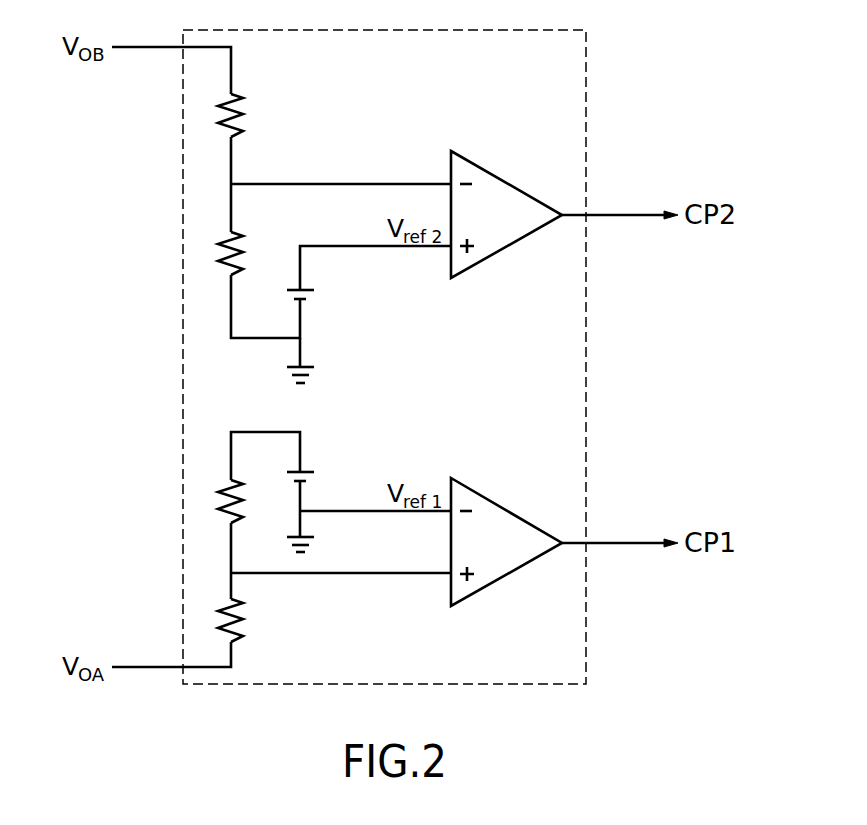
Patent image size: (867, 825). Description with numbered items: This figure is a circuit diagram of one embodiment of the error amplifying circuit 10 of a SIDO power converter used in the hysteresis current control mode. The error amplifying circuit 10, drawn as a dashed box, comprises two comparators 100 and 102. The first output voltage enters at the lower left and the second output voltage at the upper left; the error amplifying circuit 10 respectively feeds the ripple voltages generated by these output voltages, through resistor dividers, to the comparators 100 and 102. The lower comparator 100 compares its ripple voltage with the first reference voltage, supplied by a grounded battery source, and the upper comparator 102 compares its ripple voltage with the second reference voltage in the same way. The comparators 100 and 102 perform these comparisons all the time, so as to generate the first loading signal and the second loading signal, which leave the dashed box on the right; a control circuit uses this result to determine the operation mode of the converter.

The error amplifying circuit 10 is at (586, 89).
The comparator 100 is at (505, 506).
The comparator 102 is at (505, 178).